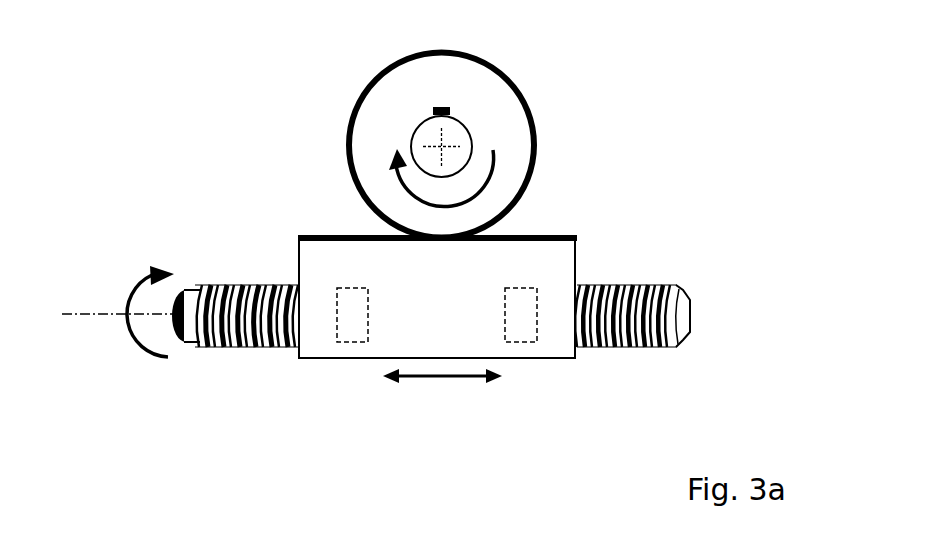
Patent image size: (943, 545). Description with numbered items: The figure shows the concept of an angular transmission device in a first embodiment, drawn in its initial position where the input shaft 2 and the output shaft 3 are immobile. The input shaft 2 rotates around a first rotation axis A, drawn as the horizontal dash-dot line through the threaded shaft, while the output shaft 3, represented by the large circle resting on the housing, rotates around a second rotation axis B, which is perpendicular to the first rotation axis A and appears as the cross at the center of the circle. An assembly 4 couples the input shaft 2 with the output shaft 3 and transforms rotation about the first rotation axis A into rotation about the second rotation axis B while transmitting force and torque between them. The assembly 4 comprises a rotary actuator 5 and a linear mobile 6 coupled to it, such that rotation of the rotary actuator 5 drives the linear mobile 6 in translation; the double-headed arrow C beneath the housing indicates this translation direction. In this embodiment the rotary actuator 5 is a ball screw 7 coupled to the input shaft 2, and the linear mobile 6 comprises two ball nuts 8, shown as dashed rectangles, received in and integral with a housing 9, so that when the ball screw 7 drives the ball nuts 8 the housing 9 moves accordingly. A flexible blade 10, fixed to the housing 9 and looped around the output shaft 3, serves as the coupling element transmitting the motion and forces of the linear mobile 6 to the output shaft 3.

The input shaft 2 is at (682, 290).
The output shaft 3 is at (397, 85).
The assembly 4 is at (568, 253).
The rotary actuator 5 is at (690, 315).
The linear mobile 6 is at (313, 260).
The ball screw 7 is at (682, 338).
The ball nuts 8 is at (352, 343).
The housing 9 is at (315, 360).
The flexible blade 10 is at (347, 143).
The first rotation axis A is at (131, 311).
The second rotation axis B is at (442, 147).
The translation direction C is at (442, 394).